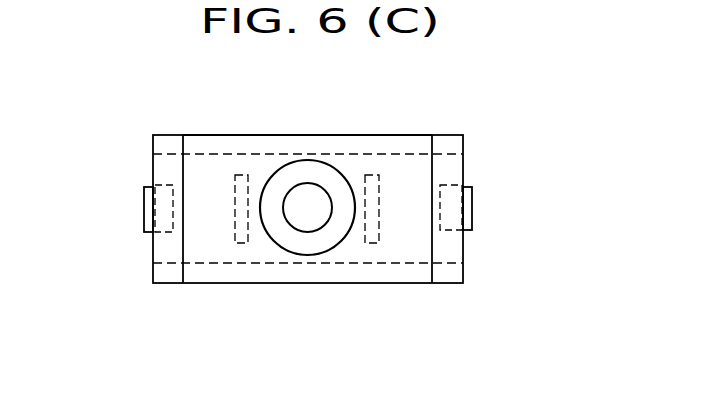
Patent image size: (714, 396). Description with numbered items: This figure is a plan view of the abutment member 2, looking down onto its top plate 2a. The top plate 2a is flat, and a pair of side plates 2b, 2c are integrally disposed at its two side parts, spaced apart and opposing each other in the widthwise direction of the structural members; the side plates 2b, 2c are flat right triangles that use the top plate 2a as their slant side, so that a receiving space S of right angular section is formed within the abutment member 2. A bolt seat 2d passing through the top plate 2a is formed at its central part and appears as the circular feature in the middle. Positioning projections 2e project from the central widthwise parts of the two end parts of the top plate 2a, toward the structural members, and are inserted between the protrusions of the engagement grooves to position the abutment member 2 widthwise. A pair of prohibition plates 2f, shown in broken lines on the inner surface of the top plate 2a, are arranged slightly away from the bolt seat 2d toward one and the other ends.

The abutment member 2 is at (389, 132).
The top plate 2a is at (229, 163).
The side plate 2b is at (144, 222).
The side plate 2c is at (330, 135).
The bolt seat 2d is at (311, 192).
The positioning projection 2e is at (472, 220).
The prohibition plate 2f is at (380, 180).
The receiving space S is at (381, 234).